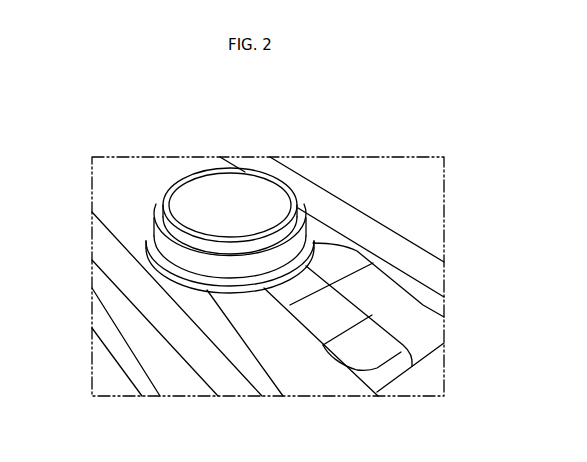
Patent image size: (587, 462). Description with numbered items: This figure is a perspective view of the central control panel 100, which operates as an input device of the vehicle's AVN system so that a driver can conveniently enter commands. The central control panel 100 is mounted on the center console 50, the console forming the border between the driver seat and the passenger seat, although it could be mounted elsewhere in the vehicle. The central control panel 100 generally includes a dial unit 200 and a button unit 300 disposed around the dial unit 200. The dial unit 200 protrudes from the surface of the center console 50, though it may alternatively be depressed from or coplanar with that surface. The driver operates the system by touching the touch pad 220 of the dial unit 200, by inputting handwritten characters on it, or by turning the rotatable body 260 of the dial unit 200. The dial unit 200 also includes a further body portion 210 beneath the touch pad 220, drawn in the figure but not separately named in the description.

The central control panel 100 is at (135, 150).
The dial unit 200 is at (183, 221).
The touch pad 220 is at (190, 202).
The body 210 is at (172, 221).
The rotatable body 260 is at (188, 258).
The center console 50 is at (195, 343).
The button unit 300 is at (418, 327).